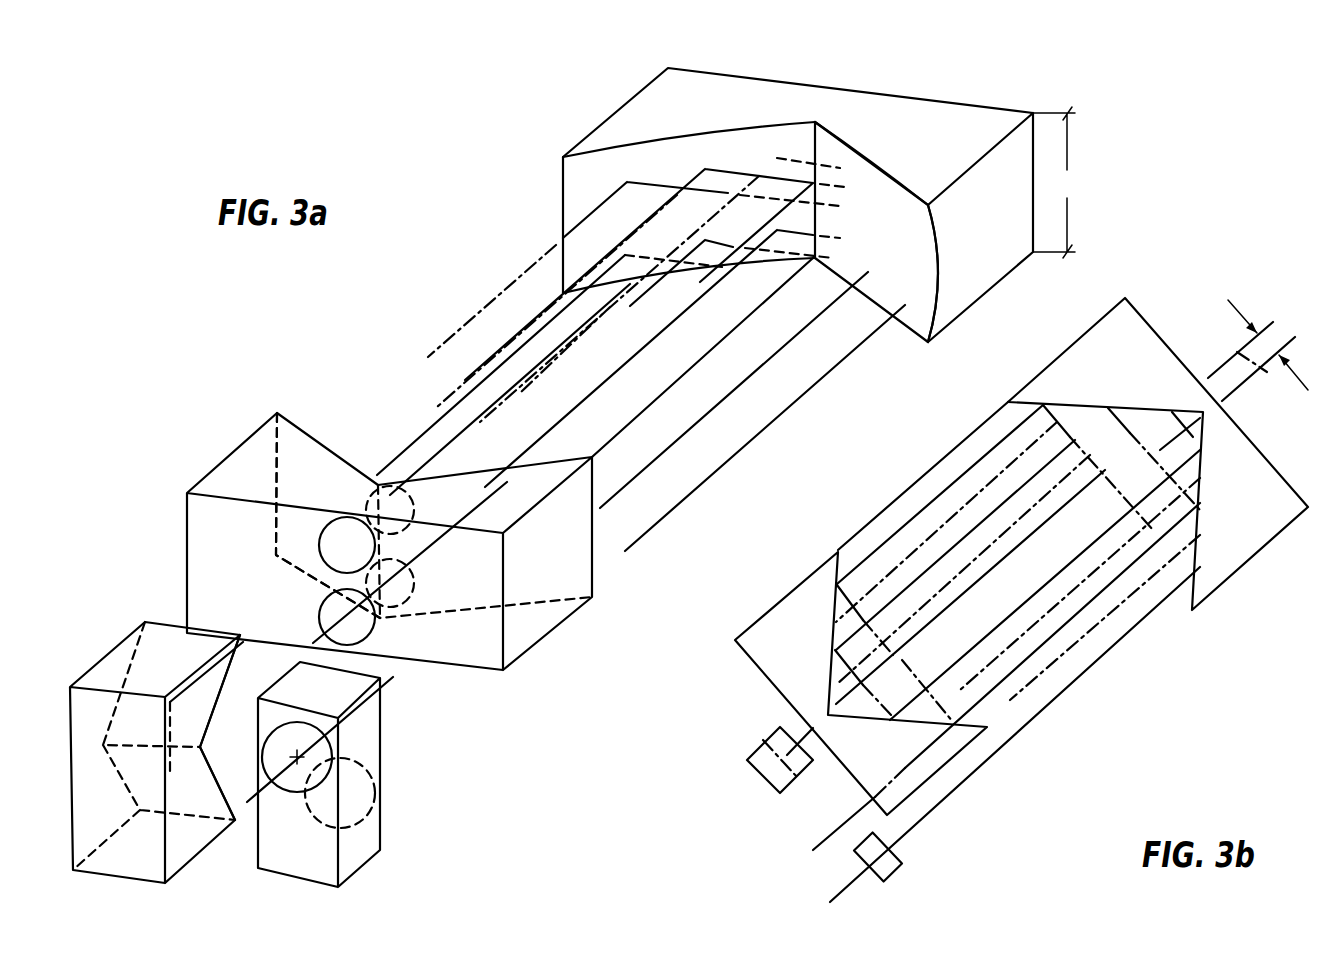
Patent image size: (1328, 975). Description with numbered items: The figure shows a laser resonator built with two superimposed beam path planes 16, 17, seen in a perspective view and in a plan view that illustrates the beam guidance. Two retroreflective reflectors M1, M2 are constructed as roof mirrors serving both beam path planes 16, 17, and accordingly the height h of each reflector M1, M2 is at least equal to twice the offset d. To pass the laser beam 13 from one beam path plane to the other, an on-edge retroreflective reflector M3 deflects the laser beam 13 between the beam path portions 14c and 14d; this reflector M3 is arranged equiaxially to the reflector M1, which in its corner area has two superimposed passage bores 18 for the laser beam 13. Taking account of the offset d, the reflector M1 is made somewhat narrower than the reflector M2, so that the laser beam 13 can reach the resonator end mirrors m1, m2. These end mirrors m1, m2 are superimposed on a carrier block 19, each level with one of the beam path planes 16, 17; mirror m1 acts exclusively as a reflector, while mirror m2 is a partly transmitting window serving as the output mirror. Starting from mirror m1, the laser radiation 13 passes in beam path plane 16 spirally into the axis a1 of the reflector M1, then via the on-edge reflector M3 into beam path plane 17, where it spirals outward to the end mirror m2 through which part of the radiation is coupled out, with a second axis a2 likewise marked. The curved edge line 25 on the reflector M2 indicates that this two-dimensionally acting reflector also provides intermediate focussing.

In FIG. 3B, the laser beam 13 is at (1022, 735).
In FIG. 3A, the beam path portion 14c is at (243, 718).
In FIG. 3A, the beam path portion 14d is at (277, 597).
In FIG. 3A, the beam path plane 16 is at (908, 293).
In FIG. 3A, the beam path plane 17 is at (608, 183).
In FIG. 3A, the passage bores 18 is at (320, 555).
In FIG. 3A, the carrier block 19 is at (380, 848).
In FIG. 3B, the carrier block 19 is at (897, 873).
In FIG. 3A, the curved edge line 25 is at (936, 290).
In FIG. 3A, the retroreflective reflector M1 is at (222, 472).
In FIG. 3B, the retroreflective reflector M1 is at (810, 651).
In FIG. 3A, the retroreflective reflector M2 is at (1012, 243).
In FIG. 3B, the retroreflective reflector M2 is at (1134, 392).
In FIG. 3A, the on-edge retroreflective reflector M3 is at (158, 867).
In FIG. 3B, the on-edge retroreflective reflector M3 is at (755, 768).
In FIG. 3A, the resonator end mirror m1 is at (373, 788).
In FIG. 3A, the resonator end mirror m2 is at (335, 700).
In FIG. 3A, the height h is at (1054, 182).
In FIG. 3B, the offset d is at (1268, 345).
In FIG. 3B, the axis a1 is at (1228, 361).
In FIG. 3B, the outgoing beam axis a2 is at (1242, 386).